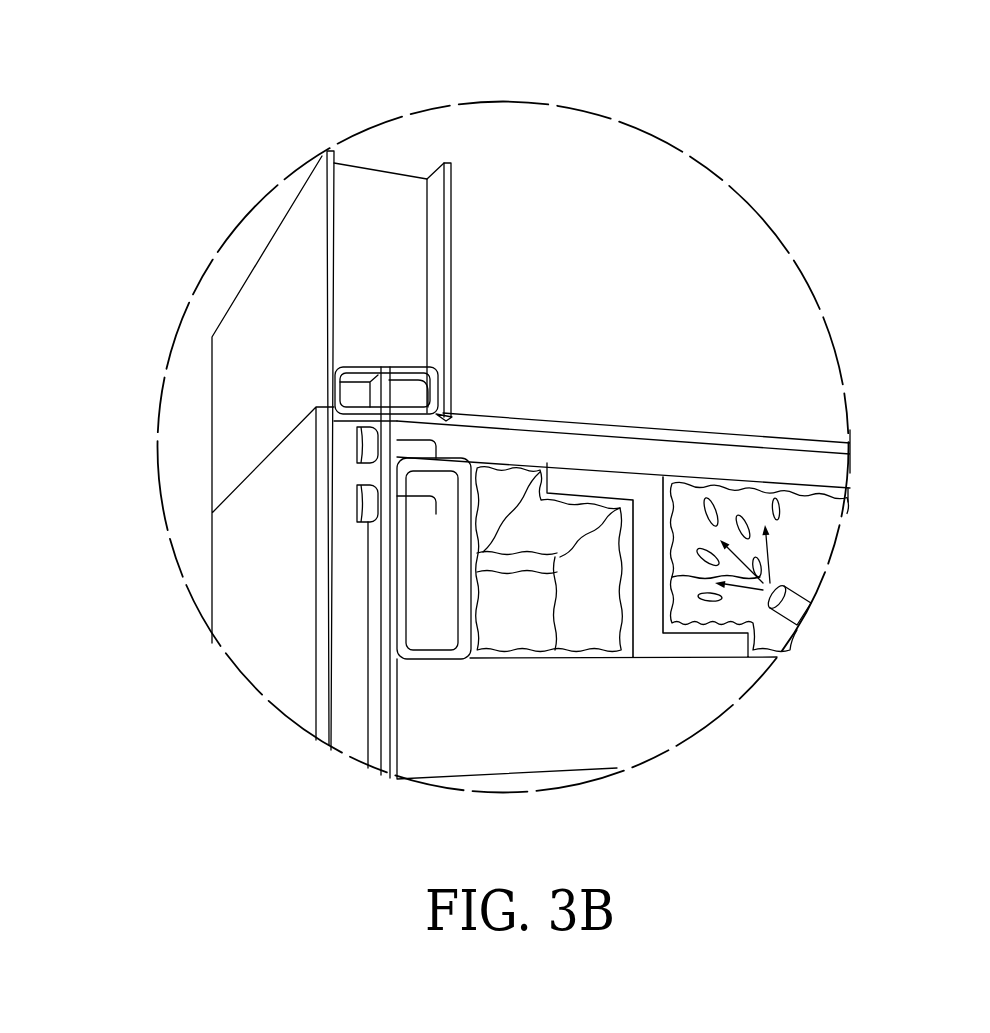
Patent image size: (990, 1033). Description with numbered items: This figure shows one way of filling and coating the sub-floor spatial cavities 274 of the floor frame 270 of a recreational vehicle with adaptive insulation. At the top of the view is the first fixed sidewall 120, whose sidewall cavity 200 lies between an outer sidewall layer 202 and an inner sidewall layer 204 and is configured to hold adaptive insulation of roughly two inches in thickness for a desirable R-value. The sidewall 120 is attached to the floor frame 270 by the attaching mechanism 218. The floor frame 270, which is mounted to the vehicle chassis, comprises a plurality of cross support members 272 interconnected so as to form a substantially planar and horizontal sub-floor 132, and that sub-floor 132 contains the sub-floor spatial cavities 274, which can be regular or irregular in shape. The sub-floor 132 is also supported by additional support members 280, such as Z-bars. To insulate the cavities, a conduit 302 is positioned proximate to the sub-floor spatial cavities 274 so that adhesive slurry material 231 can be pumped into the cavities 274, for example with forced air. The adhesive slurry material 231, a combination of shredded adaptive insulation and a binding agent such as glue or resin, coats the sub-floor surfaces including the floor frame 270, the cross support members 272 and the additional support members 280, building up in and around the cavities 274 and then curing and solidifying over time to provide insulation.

The first fixed sidewall 120 is at (262, 392).
The sidewall cavity 200 is at (372, 192).
The outer sidewall layer 202 is at (327, 212).
The inner sidewall layer 204 is at (452, 217).
The sub-floor 132 is at (823, 472).
The attaching mechanism 218 is at (427, 507).
The floor frame 270 is at (250, 618).
The cross support members 272 is at (695, 703).
The sub-floor spatial cavities 274 is at (512, 607).
The additional support members 280 is at (647, 523).
The adhesive slurry material 231 is at (770, 578).
The conduit 302 is at (790, 613).